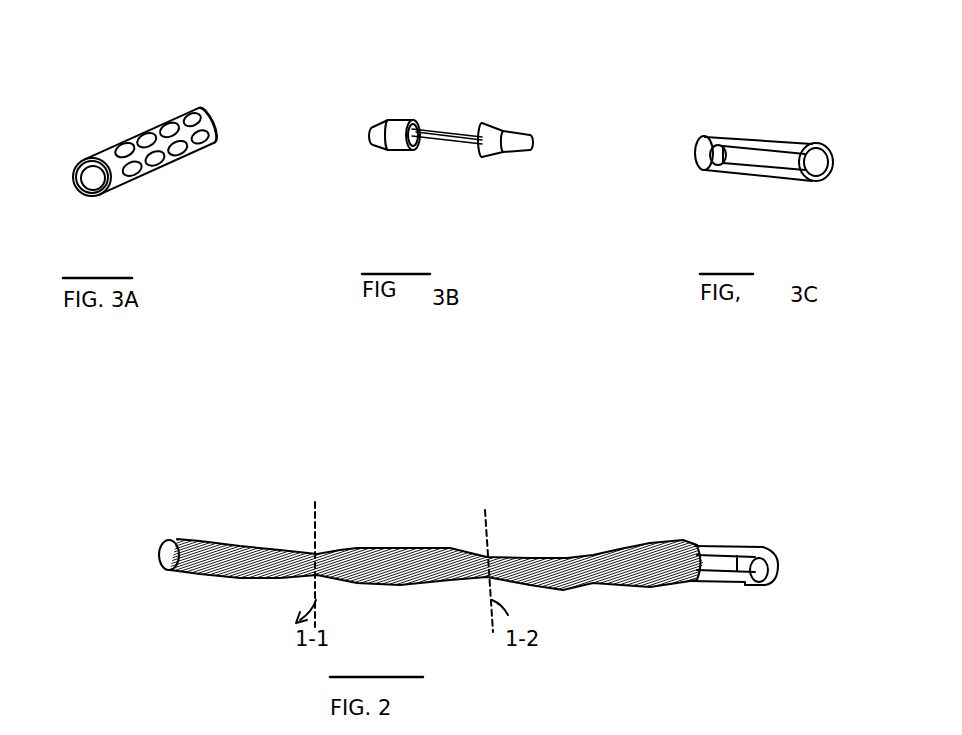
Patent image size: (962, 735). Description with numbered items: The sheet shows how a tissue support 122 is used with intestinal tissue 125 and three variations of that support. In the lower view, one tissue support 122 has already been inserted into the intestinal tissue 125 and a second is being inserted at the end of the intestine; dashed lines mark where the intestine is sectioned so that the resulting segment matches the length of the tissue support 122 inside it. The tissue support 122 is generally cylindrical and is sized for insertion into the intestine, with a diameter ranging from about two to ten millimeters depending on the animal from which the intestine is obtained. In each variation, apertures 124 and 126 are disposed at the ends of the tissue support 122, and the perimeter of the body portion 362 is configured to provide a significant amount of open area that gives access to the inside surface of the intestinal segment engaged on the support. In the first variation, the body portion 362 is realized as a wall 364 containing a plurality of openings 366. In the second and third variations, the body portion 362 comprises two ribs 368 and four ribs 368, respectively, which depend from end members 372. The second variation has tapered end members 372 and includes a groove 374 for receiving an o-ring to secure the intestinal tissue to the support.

In FIG. 3A, the tissue support 122 is at (162, 62).
In FIG. 3B, the tissue support 122 is at (465, 72).
In FIG. 3C, the tissue support 122 is at (766, 78).
In FIG. 2, the tissue support 122 is at (397, 570).
In FIG. 3A, the aperture 124 is at (92, 187).
In FIG. 3B, the aperture 124 is at (370, 135).
In FIG. 3C, the aperture 124 is at (694, 155).
In FIG. 2, the intestinal tissue 125 is at (203, 583).
In FIG. 3A, the aperture 126 is at (217, 120).
In FIG. 3B, the aperture 126 is at (532, 148).
In FIG. 3C, the aperture 126 is at (818, 162).
In FIG. 3A, the body portion 362 is at (120, 125).
In FIG. 3B, the body portion 362 is at (447, 155).
In FIG. 3C, the body portion 362 is at (762, 185).
In FIG. 3A, the wall 364 is at (108, 153).
In FIG. 3A, the openings 366 is at (155, 157).
In FIG. 3B, the ribs 368 is at (440, 127).
In FIG. 3C, the ribs 368 is at (753, 137).
In FIG. 3B, the end members 372 is at (403, 118).
In FIG. 3C, the end members 372 is at (707, 137).
In FIG. 3B, the groove 374 is at (510, 127).